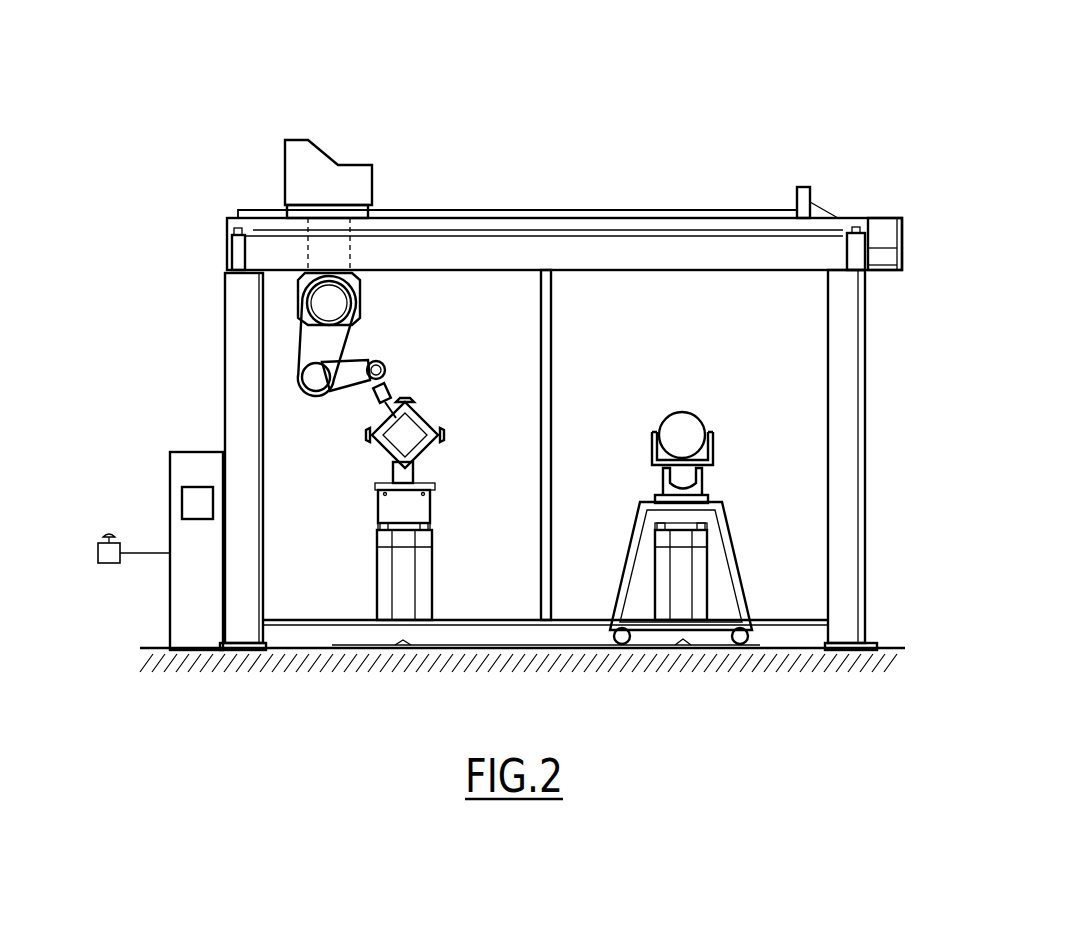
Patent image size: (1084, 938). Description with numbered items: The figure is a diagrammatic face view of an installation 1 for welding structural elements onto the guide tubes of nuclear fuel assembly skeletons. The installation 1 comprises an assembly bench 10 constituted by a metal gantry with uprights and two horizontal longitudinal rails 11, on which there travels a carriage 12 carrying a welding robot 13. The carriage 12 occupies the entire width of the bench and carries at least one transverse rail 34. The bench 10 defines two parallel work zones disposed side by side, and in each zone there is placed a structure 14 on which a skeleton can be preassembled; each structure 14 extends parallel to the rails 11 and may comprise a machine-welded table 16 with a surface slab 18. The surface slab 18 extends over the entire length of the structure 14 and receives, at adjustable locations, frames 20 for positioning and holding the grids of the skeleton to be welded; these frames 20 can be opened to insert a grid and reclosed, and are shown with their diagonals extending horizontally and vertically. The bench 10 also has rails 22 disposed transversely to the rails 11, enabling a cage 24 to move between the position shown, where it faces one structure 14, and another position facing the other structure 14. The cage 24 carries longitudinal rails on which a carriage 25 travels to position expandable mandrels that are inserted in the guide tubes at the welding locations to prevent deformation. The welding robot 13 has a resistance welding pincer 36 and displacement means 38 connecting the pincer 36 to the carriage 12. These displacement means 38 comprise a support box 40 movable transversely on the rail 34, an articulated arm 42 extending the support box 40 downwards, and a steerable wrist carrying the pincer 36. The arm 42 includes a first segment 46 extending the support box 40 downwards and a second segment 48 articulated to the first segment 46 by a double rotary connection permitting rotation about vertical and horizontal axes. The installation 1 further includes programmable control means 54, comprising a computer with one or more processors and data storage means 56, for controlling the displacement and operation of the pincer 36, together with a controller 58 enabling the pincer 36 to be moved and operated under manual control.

The installation 1 is at (810, 112).
The assembly bench 10 is at (500, 383).
The horizontal longitudinal rails 11 is at (235, 255).
The carriage 12 is at (708, 222).
The welding robot 13 is at (309, 157).
The structure 14 is at (533, 541).
The machine-welded table 16 is at (425, 535).
The surface slab 18 is at (392, 507).
The frames 20 is at (422, 448).
The transverse rails 22 is at (513, 650).
The cage 24 is at (663, 500).
The carriage 25 is at (685, 425).
The transverse rail 34 is at (507, 210).
The resistance welding pincer 36 is at (372, 393).
The displacement means 38 is at (402, 358).
The support box 40 is at (300, 168).
The articulated arm 42 is at (328, 378).
The first segment 46 is at (355, 307).
The second segment 48 is at (313, 335).
The programmable control means 54 is at (144, 509).
The data storage means 56 is at (188, 505).
The controller 58 is at (110, 563).